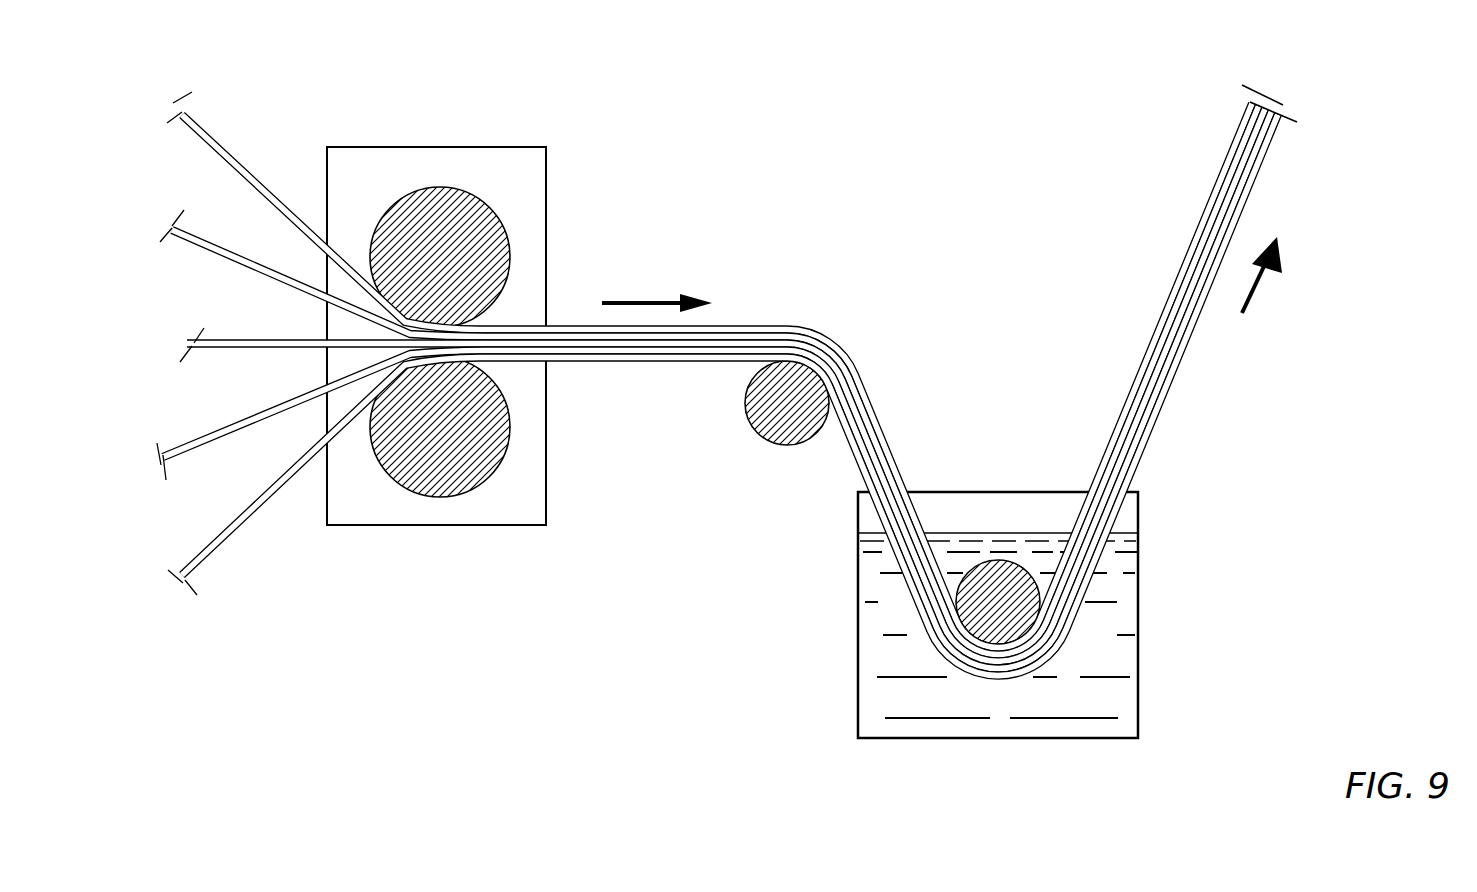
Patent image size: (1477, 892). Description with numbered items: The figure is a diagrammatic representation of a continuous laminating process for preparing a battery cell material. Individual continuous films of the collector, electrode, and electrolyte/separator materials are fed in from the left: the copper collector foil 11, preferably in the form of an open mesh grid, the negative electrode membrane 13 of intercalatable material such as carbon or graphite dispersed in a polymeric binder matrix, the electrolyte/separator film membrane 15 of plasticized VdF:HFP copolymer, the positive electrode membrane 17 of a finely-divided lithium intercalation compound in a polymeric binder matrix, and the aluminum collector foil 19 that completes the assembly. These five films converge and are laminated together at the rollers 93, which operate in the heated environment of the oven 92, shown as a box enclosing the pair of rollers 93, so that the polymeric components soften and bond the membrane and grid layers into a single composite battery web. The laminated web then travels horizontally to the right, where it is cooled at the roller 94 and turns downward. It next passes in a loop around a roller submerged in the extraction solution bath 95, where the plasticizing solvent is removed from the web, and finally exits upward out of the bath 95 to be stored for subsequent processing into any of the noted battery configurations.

The copper collector foil 11 is at (215, 557).
The negative electrode membrane 13 is at (220, 447).
The electrolyte/separator film membrane 15 is at (240, 350).
The positive electrode membrane 17 is at (217, 253).
The aluminum collector foil 19 is at (197, 137).
The oven 92 is at (546, 218).
The rollers 93 is at (387, 207).
The roller 94 is at (773, 438).
The extraction solution bath 95 is at (1140, 648).